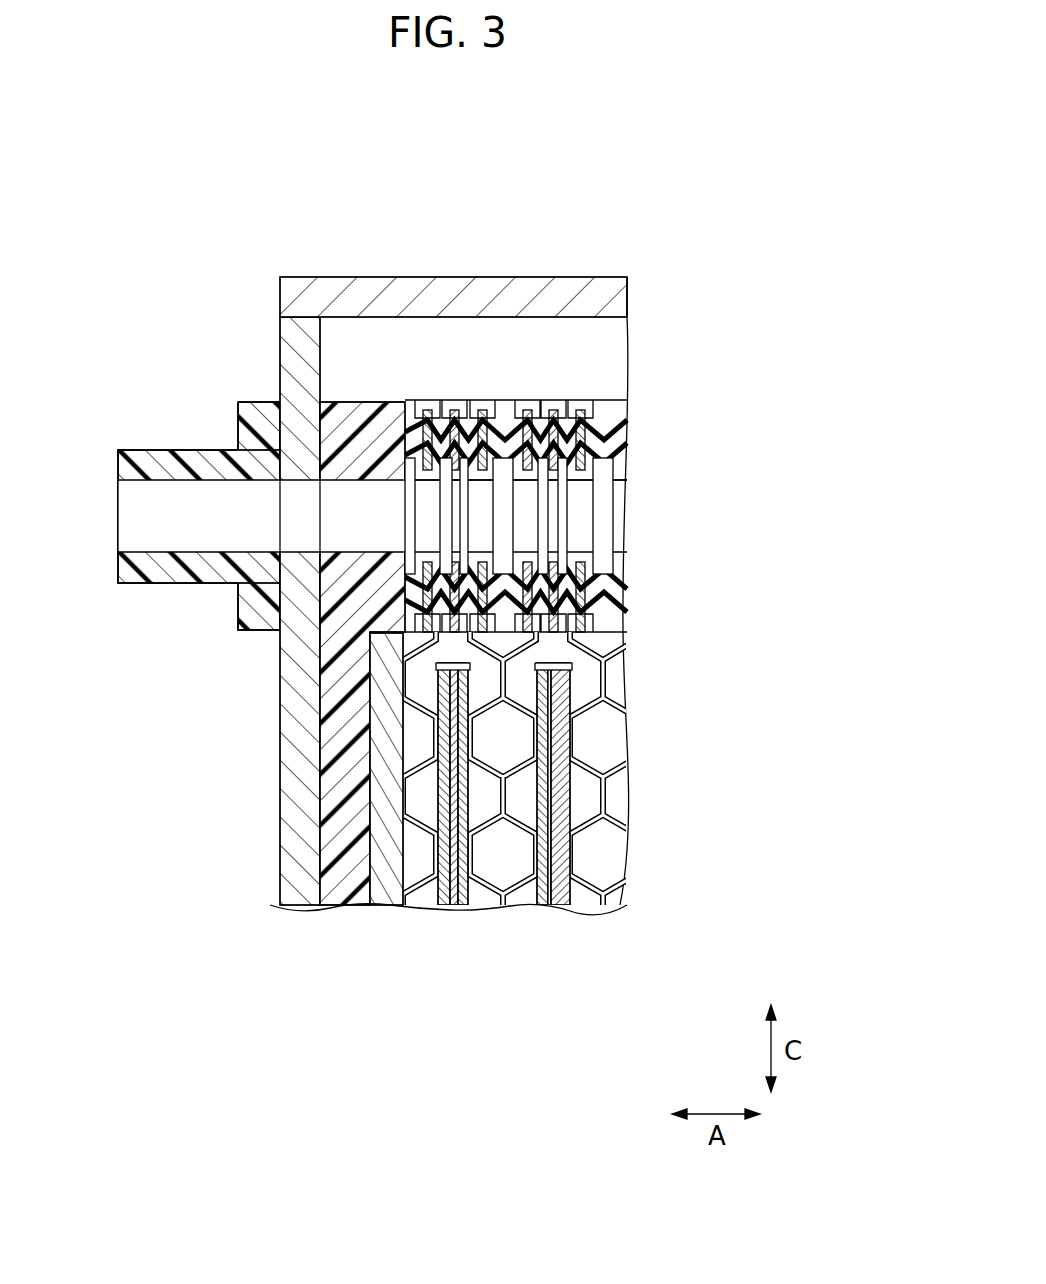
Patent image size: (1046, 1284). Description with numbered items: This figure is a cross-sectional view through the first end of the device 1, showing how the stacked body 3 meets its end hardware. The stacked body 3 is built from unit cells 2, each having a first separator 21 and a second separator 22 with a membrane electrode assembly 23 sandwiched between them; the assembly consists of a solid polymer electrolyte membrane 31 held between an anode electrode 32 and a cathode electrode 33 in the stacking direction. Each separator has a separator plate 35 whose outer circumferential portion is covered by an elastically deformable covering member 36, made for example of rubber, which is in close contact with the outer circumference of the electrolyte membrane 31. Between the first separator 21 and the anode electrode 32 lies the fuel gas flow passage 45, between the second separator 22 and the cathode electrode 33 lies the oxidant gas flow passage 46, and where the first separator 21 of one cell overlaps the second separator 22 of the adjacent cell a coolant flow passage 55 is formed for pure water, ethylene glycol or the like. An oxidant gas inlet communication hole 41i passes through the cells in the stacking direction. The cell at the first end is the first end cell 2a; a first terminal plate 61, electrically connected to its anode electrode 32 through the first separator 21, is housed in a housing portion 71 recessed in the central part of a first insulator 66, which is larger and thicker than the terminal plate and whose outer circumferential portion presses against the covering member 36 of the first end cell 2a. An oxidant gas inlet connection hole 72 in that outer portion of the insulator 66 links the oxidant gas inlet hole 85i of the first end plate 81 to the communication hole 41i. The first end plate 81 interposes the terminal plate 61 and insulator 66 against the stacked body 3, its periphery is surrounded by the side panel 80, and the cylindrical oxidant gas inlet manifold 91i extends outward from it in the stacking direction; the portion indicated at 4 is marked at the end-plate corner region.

The rotary machine assembly 1 is at (210, 308).
The unit cell 2 is at (598, 394).
The first end cell 2a is at (464, 160).
The stacked body 3 is at (627, 404).
The end plate 4 is at (622, 277).
The first separator 21 is at (457, 394).
The second separator 22 is at (498, 428).
The membrane electrode assembly 23 is at (488, 388).
The solid polymer electrolyte membrane 31 is at (455, 905).
The anode electrode 32 is at (442, 907).
The cathode electrode 33 is at (466, 907).
The separator plate 35 is at (408, 900).
The covering member 36 is at (440, 392).
The oxidant gas inlet communication hole 41i is at (410, 494).
The fuel gas flow passage 45 is at (422, 805).
The oxidant gas flow passage 46 is at (482, 800).
The coolant flow passage 55 is at (505, 849).
The first terminal plate 61 is at (374, 876).
The first insulator 66 is at (358, 402).
The housing portion 71 is at (382, 640).
The oxidant gas inlet connection hole 72 is at (338, 492).
The side panel 80 is at (338, 277).
The first end plate 81 is at (292, 866).
The oxidant gas inlet hole 85i is at (272, 494).
The oxidant gas inlet manifold 91i is at (140, 452).